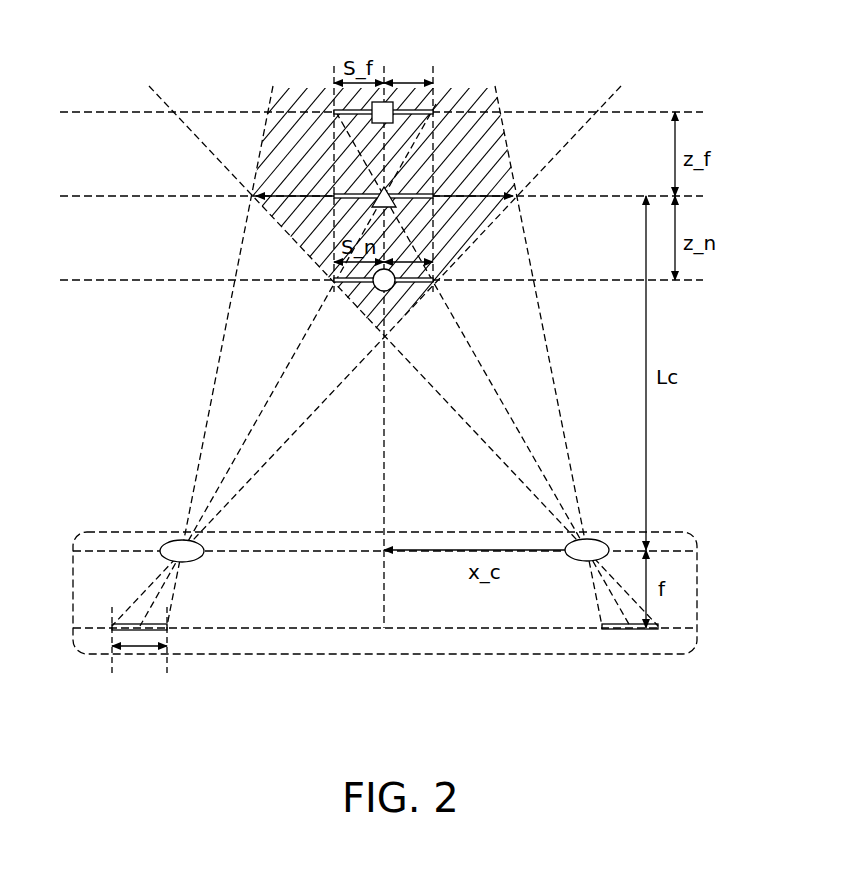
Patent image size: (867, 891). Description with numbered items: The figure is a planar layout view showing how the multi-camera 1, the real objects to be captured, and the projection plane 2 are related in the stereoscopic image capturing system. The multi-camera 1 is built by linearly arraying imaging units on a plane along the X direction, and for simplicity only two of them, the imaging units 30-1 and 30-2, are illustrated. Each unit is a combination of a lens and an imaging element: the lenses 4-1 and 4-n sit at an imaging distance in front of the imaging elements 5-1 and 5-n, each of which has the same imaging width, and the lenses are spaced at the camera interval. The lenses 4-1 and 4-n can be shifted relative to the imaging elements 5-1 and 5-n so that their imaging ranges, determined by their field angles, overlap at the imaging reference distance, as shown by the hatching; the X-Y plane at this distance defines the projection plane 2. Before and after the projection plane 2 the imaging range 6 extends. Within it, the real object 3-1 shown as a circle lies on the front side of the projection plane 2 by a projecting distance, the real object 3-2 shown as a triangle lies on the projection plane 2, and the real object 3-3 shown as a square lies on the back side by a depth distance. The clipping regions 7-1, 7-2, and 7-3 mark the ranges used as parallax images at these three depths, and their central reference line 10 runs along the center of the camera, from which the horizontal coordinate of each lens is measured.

The multi-camera 1 is at (660, 655).
The projection plane 2 is at (488, 193).
The imaging range 6 is at (498, 137).
The central reference line 10 is at (386, 445).
The real object 3-1 is at (393, 288).
The real object 3-2 is at (394, 204).
The real object 3-3 is at (393, 100).
The clipping region 7-1 is at (352, 283).
The clipping region 7-2 is at (350, 203).
The clipping region 7-3 is at (345, 113).
The lens 4-1 is at (172, 541).
The lens 4-n is at (588, 539).
The imaging element 5-1 is at (135, 624).
The imaging element 5-n is at (615, 631).
The imaging unit 30-1 is at (173, 617).
The imaging unit 30-2 is at (663, 594).